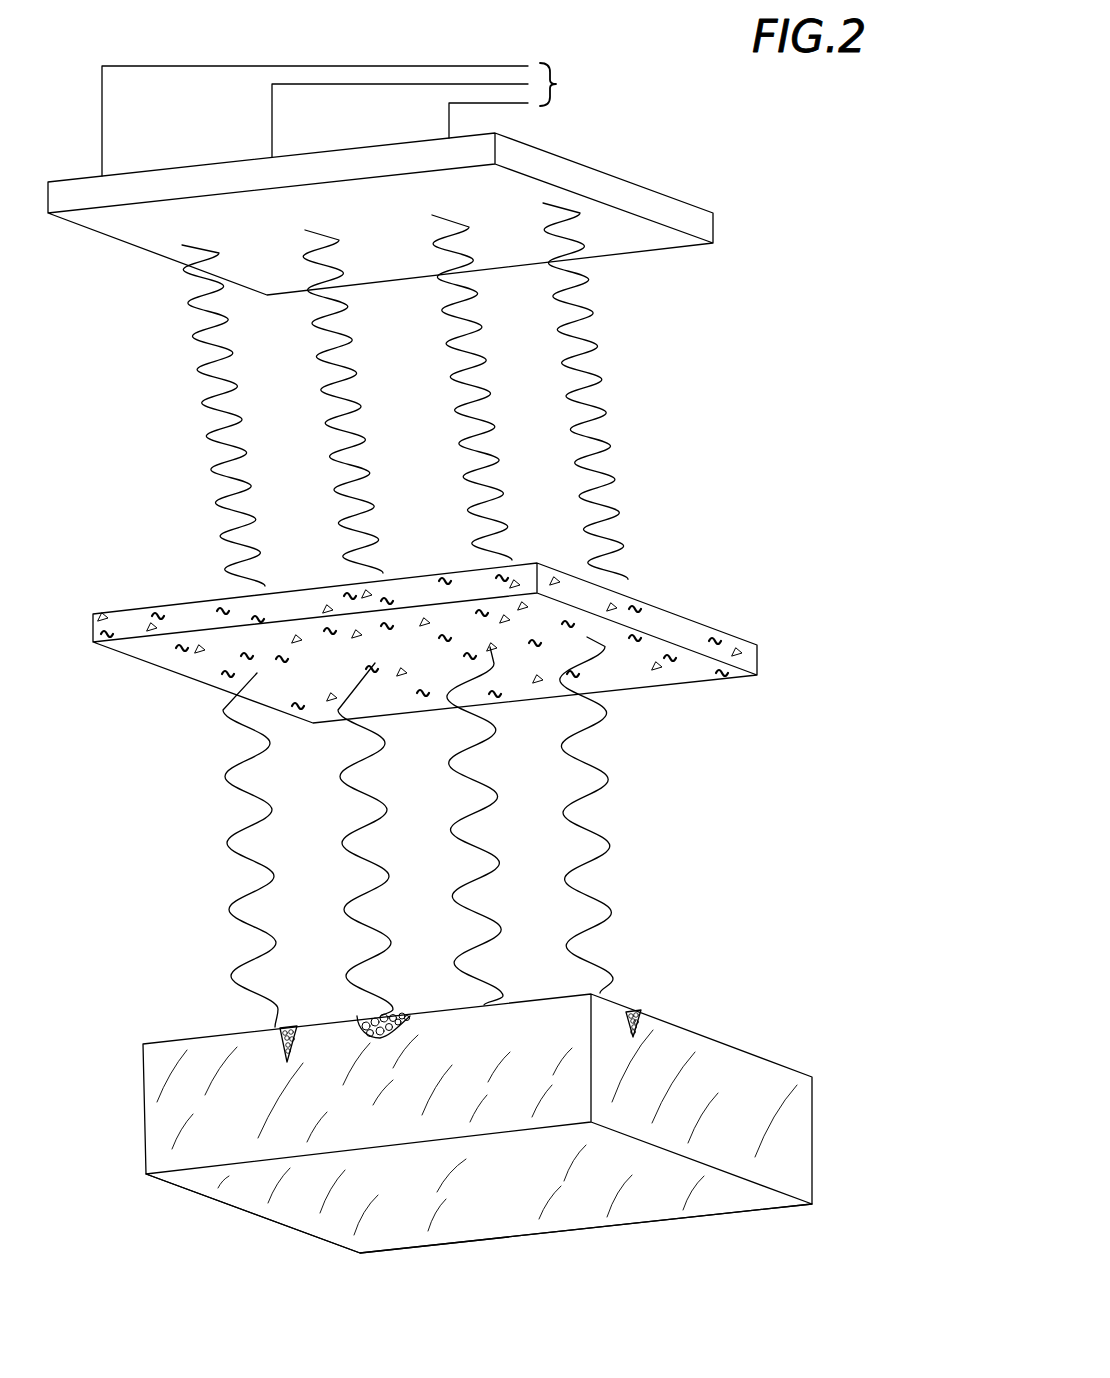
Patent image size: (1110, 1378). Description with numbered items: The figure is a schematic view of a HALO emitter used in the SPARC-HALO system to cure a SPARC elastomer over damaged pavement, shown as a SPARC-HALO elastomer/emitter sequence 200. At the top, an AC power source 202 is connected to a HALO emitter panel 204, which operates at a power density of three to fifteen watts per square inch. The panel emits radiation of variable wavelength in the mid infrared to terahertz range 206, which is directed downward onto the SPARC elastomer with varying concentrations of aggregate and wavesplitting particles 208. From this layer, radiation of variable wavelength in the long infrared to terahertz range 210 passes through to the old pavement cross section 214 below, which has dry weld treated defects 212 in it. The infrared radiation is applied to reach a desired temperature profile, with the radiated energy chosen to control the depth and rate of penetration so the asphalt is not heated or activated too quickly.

The SPARC-HALO elastomer/emitter sequence 200 is at (753, 1244).
The AC power source 202 is at (556, 84).
The HALO emitter panel 204 is at (620, 177).
The radiation of variable wavelength: mid IR—terahertz 206 is at (603, 383).
The SPARC elastomer with aggregate and wavesplitting particles 208 is at (687, 670).
The radiation of variable wavelength: long IR—terahertz 210 is at (603, 960).
The dry weld treated defects 212 is at (632, 1016).
The old pavement cross section 214 is at (248, 1210).